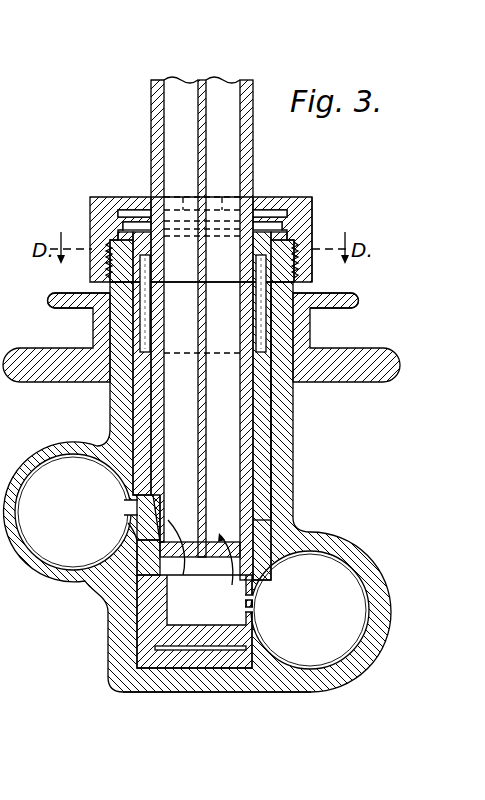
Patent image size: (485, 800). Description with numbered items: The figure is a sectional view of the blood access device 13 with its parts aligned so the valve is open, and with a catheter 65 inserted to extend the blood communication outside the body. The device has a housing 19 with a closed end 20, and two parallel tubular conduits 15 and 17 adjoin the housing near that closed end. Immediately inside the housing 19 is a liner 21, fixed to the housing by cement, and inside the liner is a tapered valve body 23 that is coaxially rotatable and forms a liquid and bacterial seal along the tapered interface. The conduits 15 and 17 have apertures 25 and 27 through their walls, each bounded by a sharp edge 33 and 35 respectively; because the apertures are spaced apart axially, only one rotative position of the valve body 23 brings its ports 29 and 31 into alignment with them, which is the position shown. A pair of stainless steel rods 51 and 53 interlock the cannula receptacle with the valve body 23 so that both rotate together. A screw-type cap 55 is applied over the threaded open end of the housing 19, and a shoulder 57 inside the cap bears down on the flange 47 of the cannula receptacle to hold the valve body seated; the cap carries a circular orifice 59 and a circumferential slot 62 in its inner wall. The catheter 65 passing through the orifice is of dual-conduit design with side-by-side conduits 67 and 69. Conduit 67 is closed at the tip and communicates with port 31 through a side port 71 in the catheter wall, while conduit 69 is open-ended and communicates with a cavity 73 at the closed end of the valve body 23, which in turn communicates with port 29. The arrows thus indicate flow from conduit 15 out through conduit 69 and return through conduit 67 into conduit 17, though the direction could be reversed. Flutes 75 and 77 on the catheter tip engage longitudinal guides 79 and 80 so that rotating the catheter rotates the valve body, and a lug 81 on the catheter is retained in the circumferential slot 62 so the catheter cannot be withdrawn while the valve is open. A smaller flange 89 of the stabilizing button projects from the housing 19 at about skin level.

The blood access device 13 is at (54, 289).
The conduit 15 is at (365, 658).
The conduit 17 is at (62, 590).
The housing 19 is at (293, 443).
The closed end 20 is at (205, 692).
The liner 21 is at (277, 478).
The valve body 23 is at (257, 520).
The aperture 25 is at (255, 597).
The aperture 27 is at (136, 510).
The port 29 is at (245, 604).
The port 31 is at (170, 514).
The sharp edge 33 is at (255, 610).
The sharp edge 35 is at (130, 528).
The flange 47 is at (312, 214).
The rod 51 is at (258, 300).
The rod 53 is at (140, 315).
The cap 55 is at (105, 197).
The shoulder 57 is at (125, 226).
The orifice 59 is at (265, 209).
The circumferential slot 62 is at (285, 215).
The catheter 65 is at (151, 97).
The conduit 67 is at (177, 86).
The conduit 69 is at (225, 88).
The side port 71 is at (178, 552).
The cavity 73 is at (172, 585).
The flute 75 is at (250, 396).
The flute 77 is at (152, 396).
The longitudinal guide 79 is at (255, 336).
The longitudinal guide 80 is at (110, 283).
The lug 81 is at (143, 212).
The smaller flange 89 is at (48, 300).